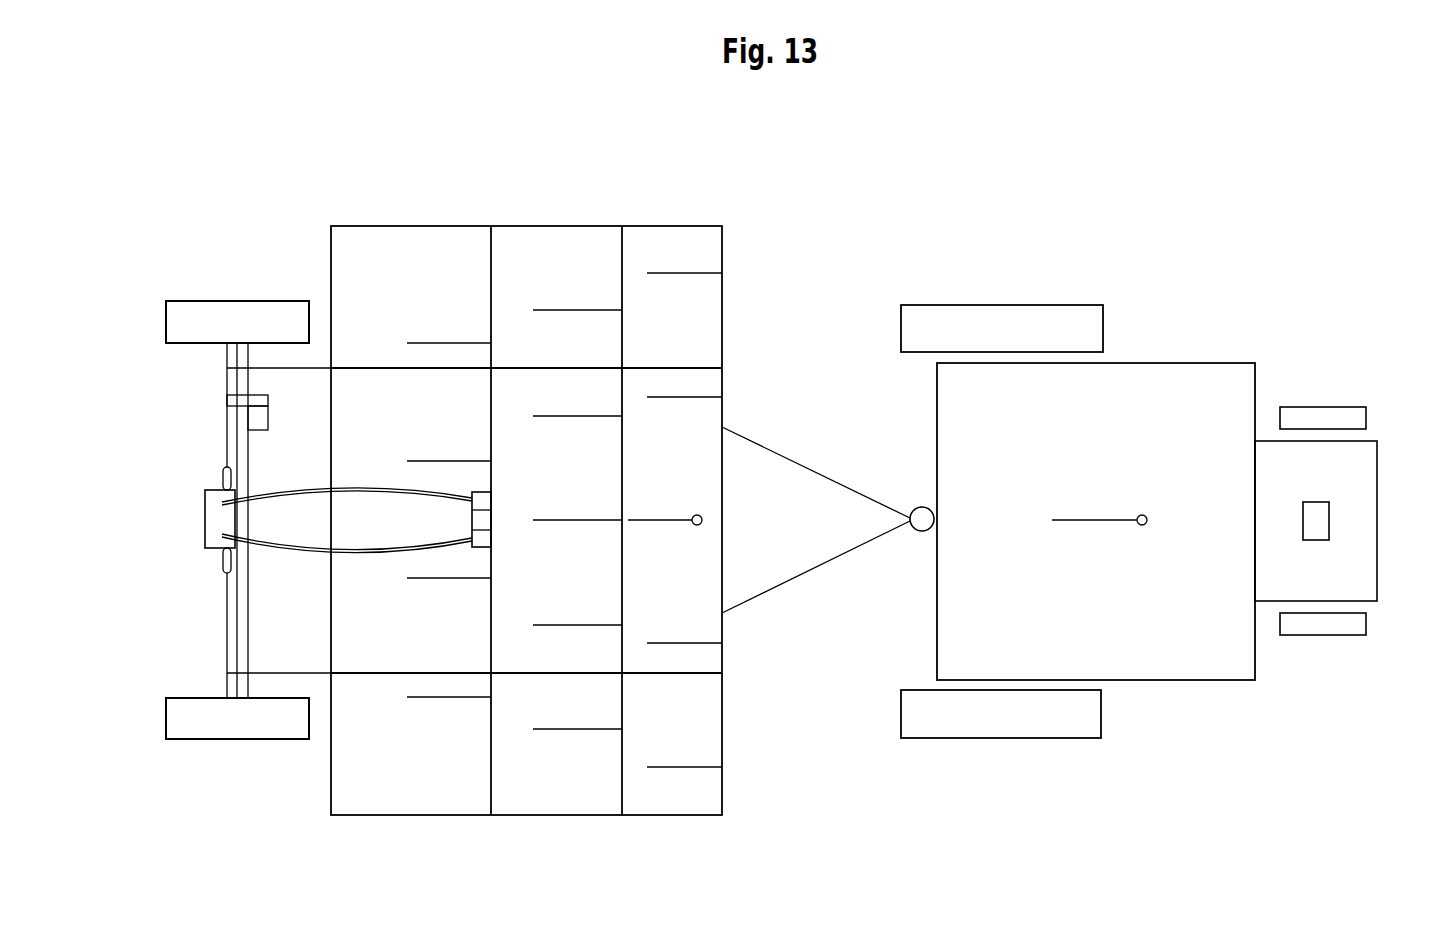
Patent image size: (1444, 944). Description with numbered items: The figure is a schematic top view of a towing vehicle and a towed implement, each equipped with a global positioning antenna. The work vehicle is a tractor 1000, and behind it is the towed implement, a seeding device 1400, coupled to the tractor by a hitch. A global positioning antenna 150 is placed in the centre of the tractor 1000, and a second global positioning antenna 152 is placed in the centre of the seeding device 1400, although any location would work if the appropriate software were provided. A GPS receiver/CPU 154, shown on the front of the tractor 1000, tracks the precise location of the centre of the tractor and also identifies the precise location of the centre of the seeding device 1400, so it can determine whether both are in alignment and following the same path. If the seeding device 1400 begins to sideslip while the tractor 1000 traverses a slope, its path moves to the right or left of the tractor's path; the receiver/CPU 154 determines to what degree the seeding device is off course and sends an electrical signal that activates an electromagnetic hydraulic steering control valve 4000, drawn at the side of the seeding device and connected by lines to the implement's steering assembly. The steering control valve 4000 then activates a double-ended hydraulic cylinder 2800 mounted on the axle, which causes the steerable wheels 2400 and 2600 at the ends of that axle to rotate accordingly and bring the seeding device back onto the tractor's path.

The tractor 1000 is at (1217, 342).
The global positioning antenna 150 is at (1095, 520).
The global positioning antenna 152 is at (688, 522).
The GPS receiver/CPU 154 is at (1329, 527).
The seeding device 1400 is at (750, 260).
The steerable wheel 2400 is at (181, 321).
The steerable wheel 2600 is at (181, 717).
The double-ended hydraulic cylinder 2800 is at (207, 520).
The electromagnetic hydraulic steering control valve 4000 is at (480, 540).